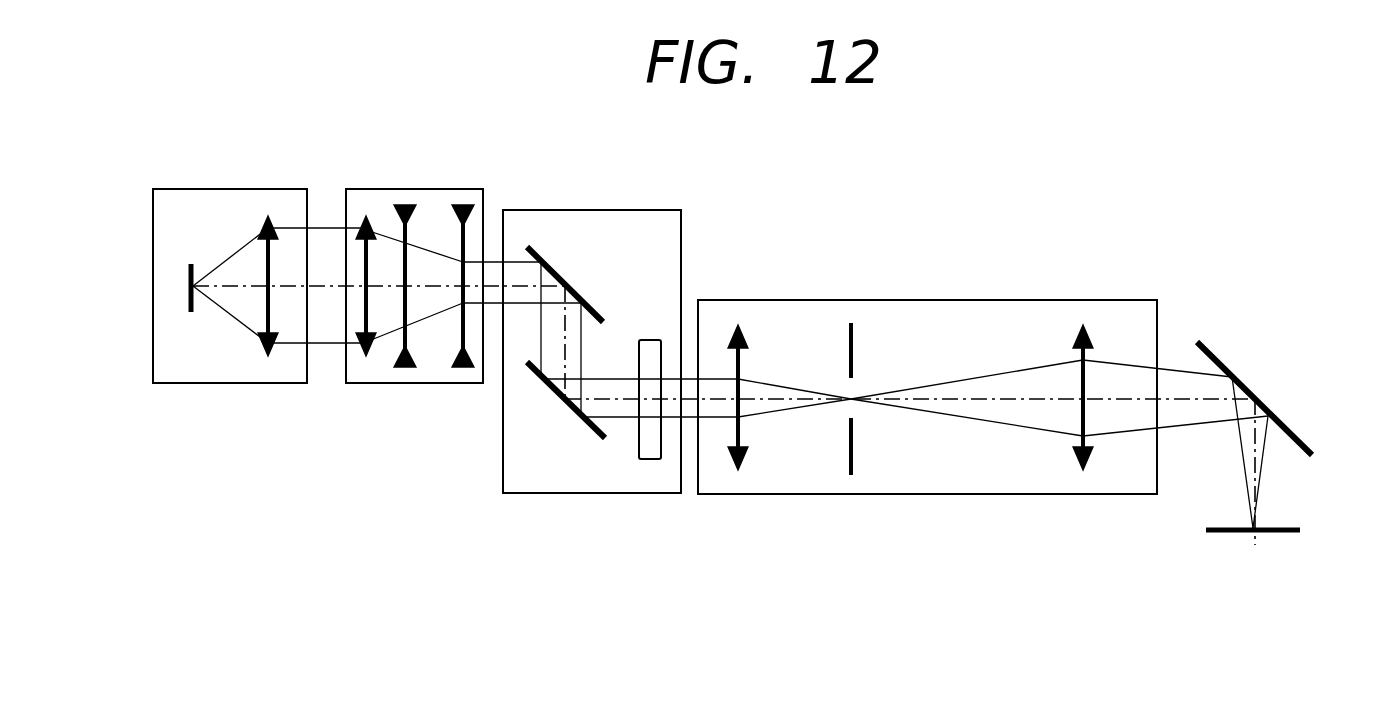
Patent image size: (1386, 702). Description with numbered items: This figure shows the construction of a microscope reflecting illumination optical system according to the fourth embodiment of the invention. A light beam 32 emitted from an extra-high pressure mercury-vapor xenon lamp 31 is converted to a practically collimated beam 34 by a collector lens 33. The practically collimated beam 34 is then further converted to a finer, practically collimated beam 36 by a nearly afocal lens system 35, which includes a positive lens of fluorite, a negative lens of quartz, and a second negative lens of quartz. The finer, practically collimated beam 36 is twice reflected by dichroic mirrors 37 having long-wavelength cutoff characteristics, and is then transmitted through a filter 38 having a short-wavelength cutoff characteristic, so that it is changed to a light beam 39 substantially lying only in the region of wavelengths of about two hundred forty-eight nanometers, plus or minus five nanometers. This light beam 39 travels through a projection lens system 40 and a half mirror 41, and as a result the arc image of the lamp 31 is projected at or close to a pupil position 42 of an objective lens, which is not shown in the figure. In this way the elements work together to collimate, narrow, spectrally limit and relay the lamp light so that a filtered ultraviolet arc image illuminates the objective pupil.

The extra-high pressure mercury-vapor xenon lamp 31 is at (191, 312).
The light beam 32 is at (228, 258).
The collector lens 33 is at (268, 354).
The practically collimated beam 34 is at (322, 227).
The nearly afocal lens system 35 is at (414, 383).
The finer practically collimated beam 36 is at (503, 262).
The dichroic mirrors 37 is at (568, 283).
The filter 38 is at (648, 459).
The light beam 39 is at (707, 378).
The projection lens system 40 is at (957, 495).
The half mirror 41 is at (1300, 437).
The pupil position 42 is at (1300, 530).